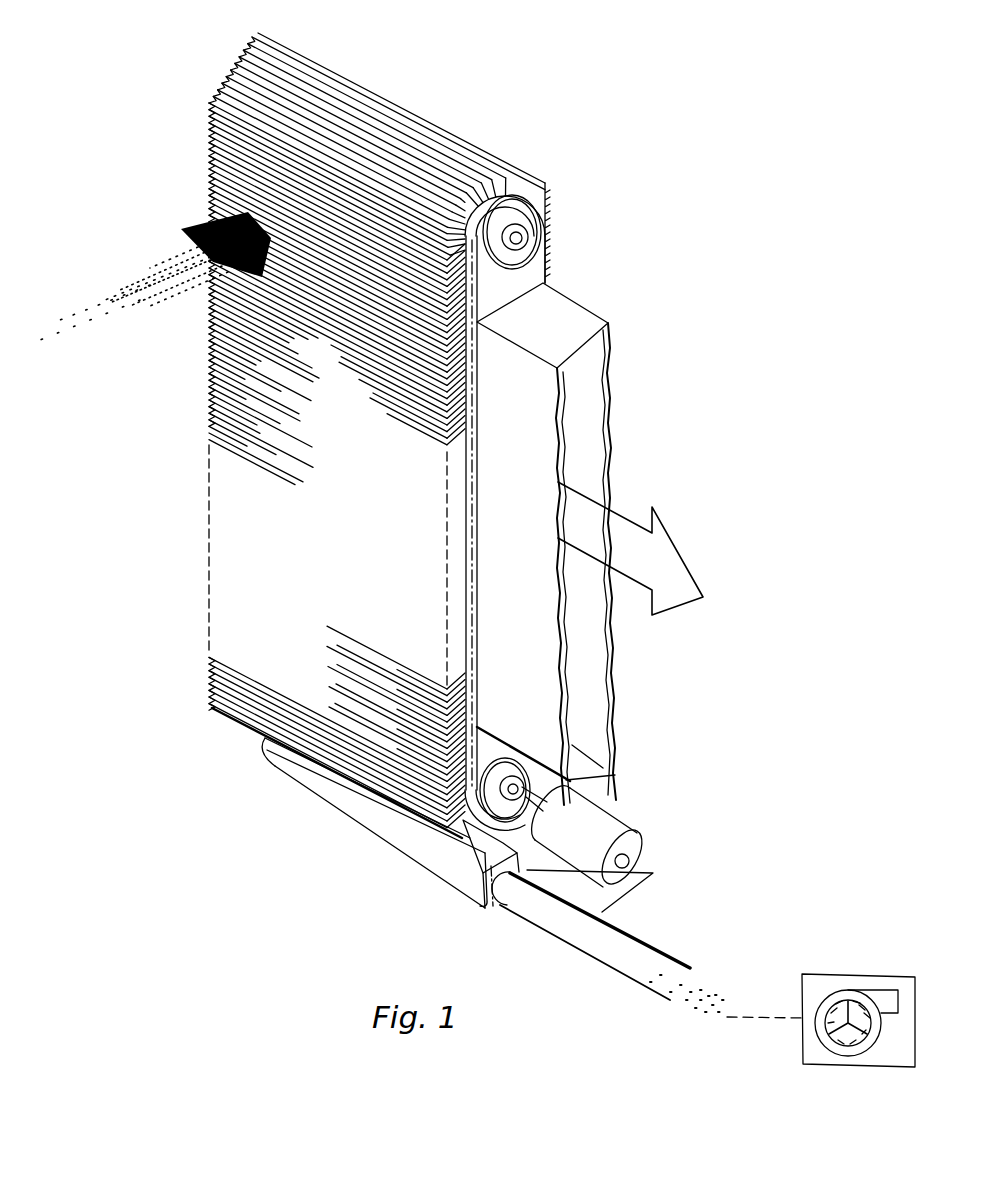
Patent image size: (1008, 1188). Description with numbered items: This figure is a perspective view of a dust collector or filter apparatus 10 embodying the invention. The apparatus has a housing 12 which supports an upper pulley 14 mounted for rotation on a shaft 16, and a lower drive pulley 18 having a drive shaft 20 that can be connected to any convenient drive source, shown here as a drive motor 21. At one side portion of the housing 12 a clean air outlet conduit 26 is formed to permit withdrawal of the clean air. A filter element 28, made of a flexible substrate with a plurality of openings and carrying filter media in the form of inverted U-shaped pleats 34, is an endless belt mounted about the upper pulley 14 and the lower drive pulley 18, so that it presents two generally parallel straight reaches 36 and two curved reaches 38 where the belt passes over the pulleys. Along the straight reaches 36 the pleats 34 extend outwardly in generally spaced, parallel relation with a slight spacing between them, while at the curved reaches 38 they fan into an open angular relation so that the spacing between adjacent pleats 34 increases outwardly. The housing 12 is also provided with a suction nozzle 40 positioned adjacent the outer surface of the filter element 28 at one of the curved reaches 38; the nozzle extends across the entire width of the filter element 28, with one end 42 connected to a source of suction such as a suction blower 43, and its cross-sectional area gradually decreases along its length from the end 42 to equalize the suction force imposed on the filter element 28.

The dust collector or filter apparatus 10 is at (648, 452).
The housing 12 is at (530, 276).
The upper pulley 14 is at (527, 221).
The shaft 16 is at (516, 243).
The lower drive pulley 18 is at (470, 810).
The drive shaft 20 is at (503, 848).
The drive motor 21 is at (607, 826).
The clean air outlet conduit 26 is at (607, 378).
The filter element 28 is at (273, 505).
The filter media pleats 34 is at (248, 46).
The straight reaches 36 is at (209, 383).
The curved reaches 38 is at (216, 96).
The suction nozzle 40 is at (458, 880).
The end of suction nozzle 42 is at (568, 928).
The suction blower 43 is at (822, 997).